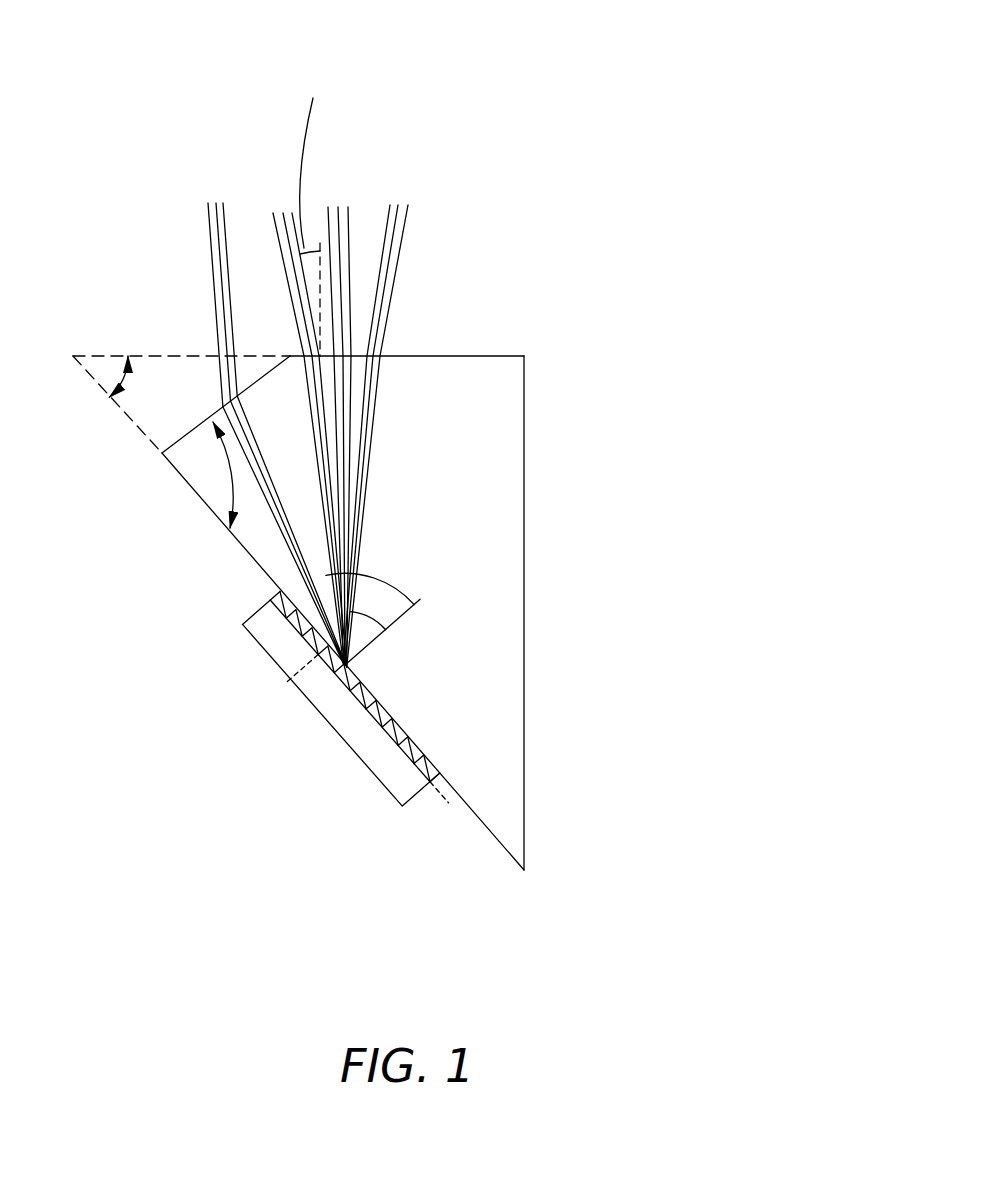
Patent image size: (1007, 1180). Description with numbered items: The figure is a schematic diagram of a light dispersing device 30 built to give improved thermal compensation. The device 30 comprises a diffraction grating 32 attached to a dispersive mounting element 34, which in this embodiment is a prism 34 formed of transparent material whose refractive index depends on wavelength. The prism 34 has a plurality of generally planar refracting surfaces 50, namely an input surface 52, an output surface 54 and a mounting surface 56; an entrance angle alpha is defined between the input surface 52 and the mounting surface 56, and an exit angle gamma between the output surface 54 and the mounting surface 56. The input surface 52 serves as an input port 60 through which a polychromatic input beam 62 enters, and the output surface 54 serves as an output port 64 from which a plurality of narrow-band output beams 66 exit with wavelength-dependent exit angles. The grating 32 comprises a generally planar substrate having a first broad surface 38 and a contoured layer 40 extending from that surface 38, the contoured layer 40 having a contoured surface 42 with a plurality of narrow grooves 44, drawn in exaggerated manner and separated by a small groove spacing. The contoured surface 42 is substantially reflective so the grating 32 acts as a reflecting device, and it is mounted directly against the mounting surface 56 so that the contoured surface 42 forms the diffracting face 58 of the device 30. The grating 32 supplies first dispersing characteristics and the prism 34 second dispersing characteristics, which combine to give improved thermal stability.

The light dispersing device 30 is at (641, 130).
The diffraction grating 32 is at (355, 778).
The dispersive mounting element 34 is at (618, 713).
The first broad surface 38 is at (350, 707).
The contoured layer 40 is at (268, 602).
The contoured surface 42 is at (373, 692).
The narrow grooves 44 is at (342, 686).
The refracting surfaces 50 is at (658, 293).
The input surface 52 is at (173, 440).
The output surface 54 is at (467, 353).
The mounting surface 56 is at (230, 528).
The diffracting face 58 is at (499, 662).
The input port 60 is at (192, 342).
The polychromatic input beam 62 is at (210, 248).
The output port 64 is at (422, 308).
The output beams 66 is at (372, 170).